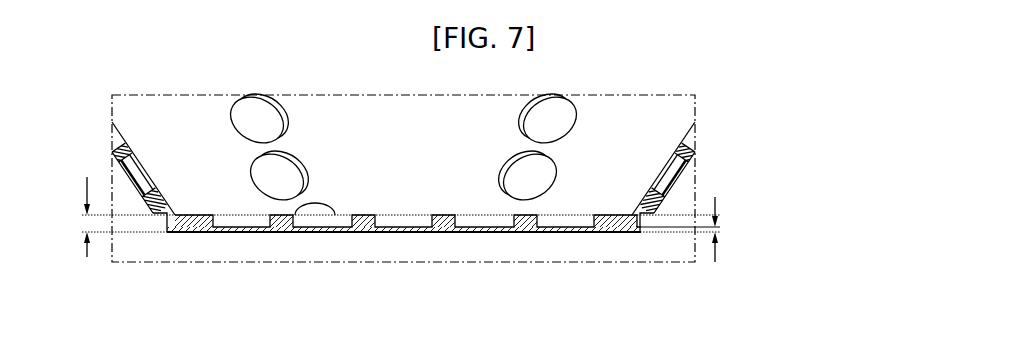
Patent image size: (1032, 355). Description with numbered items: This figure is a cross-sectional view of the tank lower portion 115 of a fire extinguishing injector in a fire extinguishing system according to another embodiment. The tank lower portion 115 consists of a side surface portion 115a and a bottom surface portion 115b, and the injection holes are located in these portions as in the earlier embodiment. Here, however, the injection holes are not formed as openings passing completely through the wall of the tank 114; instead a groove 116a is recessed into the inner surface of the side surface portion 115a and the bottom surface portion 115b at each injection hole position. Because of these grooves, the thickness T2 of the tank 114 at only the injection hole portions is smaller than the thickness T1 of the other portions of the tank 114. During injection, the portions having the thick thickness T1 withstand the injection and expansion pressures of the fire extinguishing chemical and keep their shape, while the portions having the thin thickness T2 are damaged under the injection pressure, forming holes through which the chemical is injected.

The tank 114 is at (386, 248).
The tank lower portion 115 is at (768, 168).
The side surface portion 115a is at (628, 152).
The bottom surface portion 115b is at (608, 213).
The groove 116a is at (272, 182).
The thickness of other portions of the tank T1 is at (67, 217).
The thickness of the tank at the injection hole portions T2 is at (698, 229).